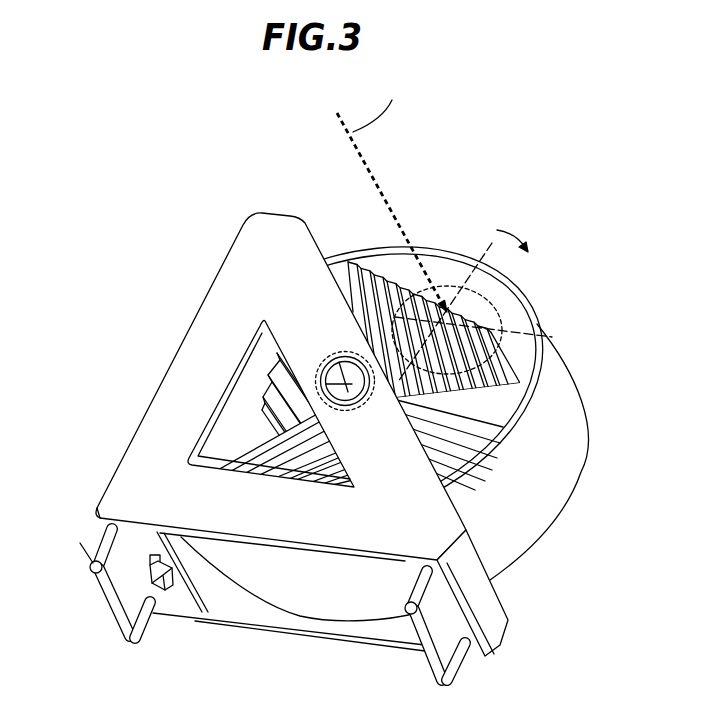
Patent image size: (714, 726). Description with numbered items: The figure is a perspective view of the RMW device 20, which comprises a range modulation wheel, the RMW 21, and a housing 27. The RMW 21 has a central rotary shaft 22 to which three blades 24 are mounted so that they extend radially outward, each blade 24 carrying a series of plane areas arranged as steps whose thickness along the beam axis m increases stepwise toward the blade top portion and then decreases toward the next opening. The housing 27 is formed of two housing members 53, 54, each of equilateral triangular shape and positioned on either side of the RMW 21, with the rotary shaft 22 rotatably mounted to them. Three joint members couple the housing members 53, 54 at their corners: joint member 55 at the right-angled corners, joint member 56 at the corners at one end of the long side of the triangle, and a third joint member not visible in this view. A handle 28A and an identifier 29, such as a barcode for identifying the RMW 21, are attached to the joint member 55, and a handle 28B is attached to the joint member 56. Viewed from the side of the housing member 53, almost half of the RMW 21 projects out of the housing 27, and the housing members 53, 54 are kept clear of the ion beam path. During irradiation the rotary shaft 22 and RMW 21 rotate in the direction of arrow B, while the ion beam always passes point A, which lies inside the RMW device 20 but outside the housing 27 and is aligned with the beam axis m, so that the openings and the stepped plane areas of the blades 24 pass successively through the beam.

The RMW device 20 is at (115, 388).
The RMW (range modulation wheel) 21 is at (560, 383).
The rotary shaft 22 is at (337, 355).
The blades 24 is at (358, 283).
The housing 27 is at (195, 372).
The handle 28A is at (110, 600).
The handle 28B is at (457, 672).
The identifier 29 is at (167, 593).
The housing member 53 is at (127, 474).
The housing member 54 is at (280, 633).
The joint member 55 is at (133, 552).
The joint member 56 is at (488, 600).
The beam axis m is at (352, 145).
The point A is at (483, 296).
The arrow B is at (497, 230).